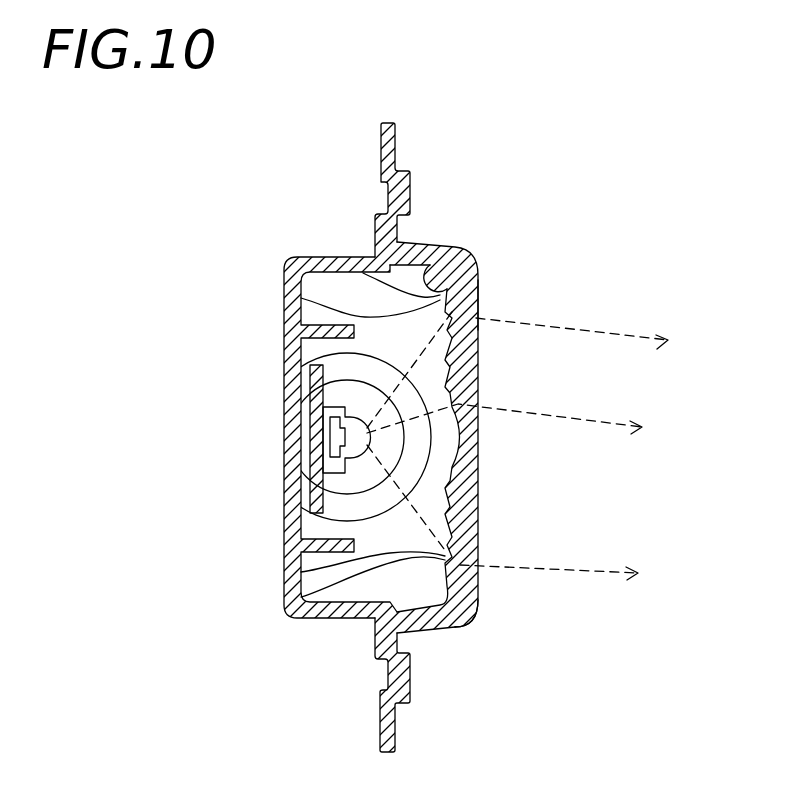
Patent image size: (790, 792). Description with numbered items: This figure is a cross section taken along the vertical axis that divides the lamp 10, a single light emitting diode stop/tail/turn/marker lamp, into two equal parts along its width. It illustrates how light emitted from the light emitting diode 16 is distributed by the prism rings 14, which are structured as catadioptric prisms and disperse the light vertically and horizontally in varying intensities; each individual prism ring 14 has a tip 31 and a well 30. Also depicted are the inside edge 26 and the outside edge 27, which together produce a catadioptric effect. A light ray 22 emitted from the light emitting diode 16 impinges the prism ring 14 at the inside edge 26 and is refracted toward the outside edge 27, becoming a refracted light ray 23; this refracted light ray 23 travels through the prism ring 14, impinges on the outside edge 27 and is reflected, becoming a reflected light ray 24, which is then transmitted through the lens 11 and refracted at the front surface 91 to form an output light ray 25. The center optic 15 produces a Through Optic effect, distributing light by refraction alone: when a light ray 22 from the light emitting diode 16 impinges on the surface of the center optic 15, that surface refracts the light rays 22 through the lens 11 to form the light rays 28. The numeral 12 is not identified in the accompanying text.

The lamp 10 is at (231, 271).
The lens 11 is at (445, 630).
The housing 12 is at (293, 618).
The prism rings 14 is at (354, 256).
The center optic 15 is at (487, 340).
The light emitting diode 16 is at (336, 436).
The light ray 22 is at (310, 367).
The refracted light ray 23 is at (350, 557).
The reflected light ray 24 is at (478, 264).
The output light ray 25 is at (618, 337).
The inside edge 26 is at (301, 298).
The outside edge 27 is at (440, 248).
The light rays 28 is at (604, 425).
The well 30 is at (470, 617).
The tip 31 is at (301, 597).
The front surface 91 is at (480, 302).